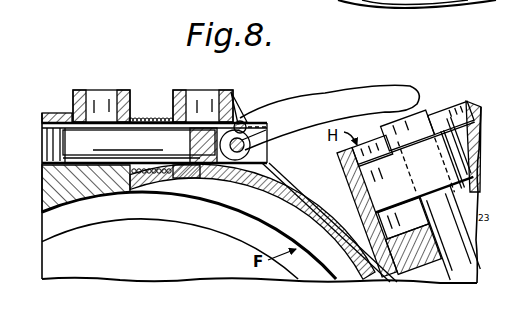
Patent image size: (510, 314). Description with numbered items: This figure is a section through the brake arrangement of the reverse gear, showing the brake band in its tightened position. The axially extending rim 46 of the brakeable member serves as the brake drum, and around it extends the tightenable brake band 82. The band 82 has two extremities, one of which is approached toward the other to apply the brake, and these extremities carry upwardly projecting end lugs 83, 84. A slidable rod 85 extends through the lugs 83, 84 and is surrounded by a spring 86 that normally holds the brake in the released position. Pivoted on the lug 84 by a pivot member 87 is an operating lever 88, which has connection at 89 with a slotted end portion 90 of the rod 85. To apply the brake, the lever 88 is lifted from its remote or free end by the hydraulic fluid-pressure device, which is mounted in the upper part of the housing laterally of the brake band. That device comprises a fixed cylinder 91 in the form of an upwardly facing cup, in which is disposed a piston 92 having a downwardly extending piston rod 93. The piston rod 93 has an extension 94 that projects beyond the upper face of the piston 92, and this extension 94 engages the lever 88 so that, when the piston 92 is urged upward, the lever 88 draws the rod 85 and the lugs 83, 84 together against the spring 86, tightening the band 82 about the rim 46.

The axially extending rim 46 is at (188, 196).
The brake band 82 is at (294, 210).
The end lug 83 is at (127, 90).
The end lug 84 is at (176, 91).
The slidable rod 85 is at (71, 130).
The spring 86 is at (157, 128).
The pivot member 87 is at (245, 117).
The operating lever 88 is at (334, 95).
The connection 89 is at (260, 132).
The slotted end portion 90 is at (191, 146).
The fixed cylinder 91 is at (474, 113).
The piston 92 is at (431, 177).
The piston rod 93 is at (419, 211).
The extension 94 is at (413, 126).